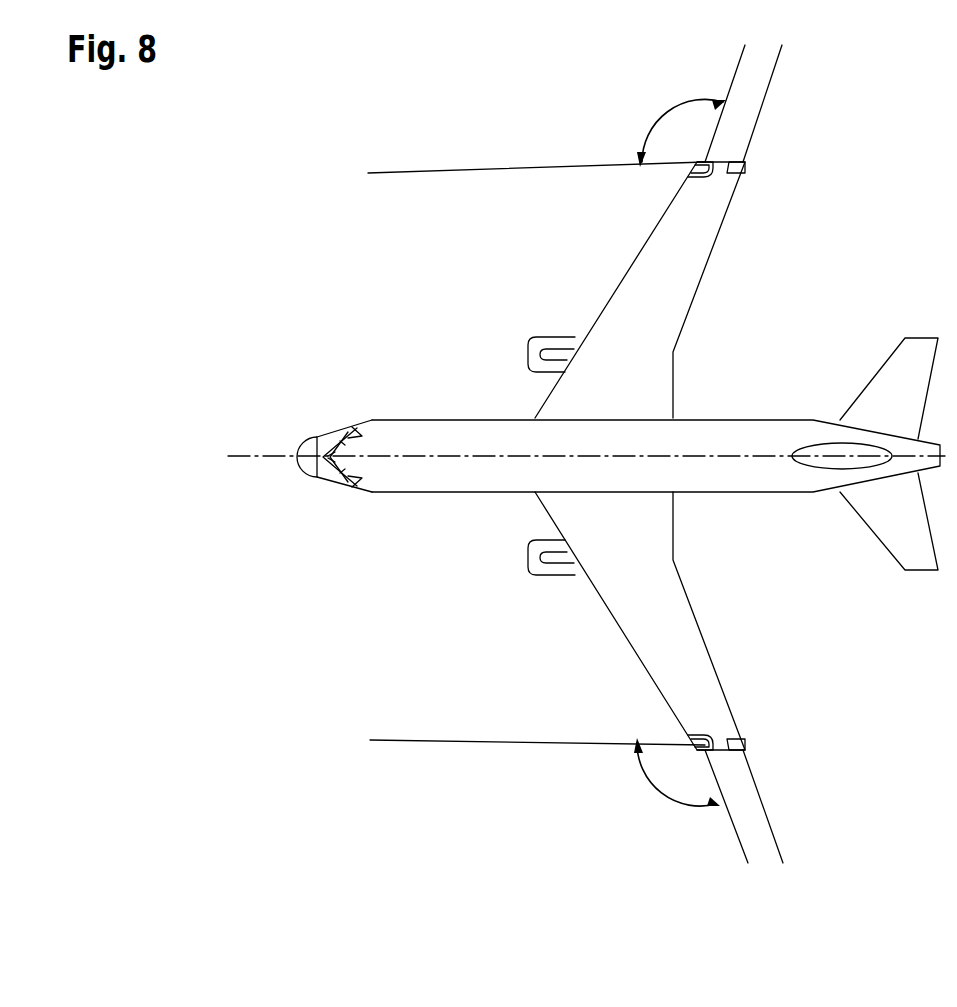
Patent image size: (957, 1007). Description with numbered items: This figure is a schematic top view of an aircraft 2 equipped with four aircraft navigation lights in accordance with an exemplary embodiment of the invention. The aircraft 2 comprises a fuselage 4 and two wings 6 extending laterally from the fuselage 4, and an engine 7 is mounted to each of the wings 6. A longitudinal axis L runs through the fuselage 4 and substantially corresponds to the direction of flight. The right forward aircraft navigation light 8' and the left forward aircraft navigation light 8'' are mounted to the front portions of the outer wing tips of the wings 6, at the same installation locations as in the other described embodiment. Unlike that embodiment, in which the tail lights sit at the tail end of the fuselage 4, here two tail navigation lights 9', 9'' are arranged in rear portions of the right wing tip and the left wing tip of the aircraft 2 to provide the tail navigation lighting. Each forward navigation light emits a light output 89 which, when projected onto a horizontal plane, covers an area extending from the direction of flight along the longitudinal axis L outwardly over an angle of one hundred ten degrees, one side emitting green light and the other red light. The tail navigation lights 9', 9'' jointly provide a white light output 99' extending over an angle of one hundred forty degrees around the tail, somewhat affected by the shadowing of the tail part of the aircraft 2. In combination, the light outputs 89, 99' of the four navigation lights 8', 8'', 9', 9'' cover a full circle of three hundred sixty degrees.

The aircraft 2 is at (887, 232).
The fuselage 4 is at (751, 475).
The wing 6 is at (653, 263).
The engine 7 is at (508, 345).
The right forward aircraft navigation light 8' is at (657, 183).
The left forward aircraft navigation light 8'' is at (655, 725).
The tail navigation light 9' is at (775, 162).
The tail navigation light 9'' is at (778, 745).
The white light output 99' is at (785, 454).
The light output 89 is at (400, 190).
The longitudinal axis L is at (240, 458).